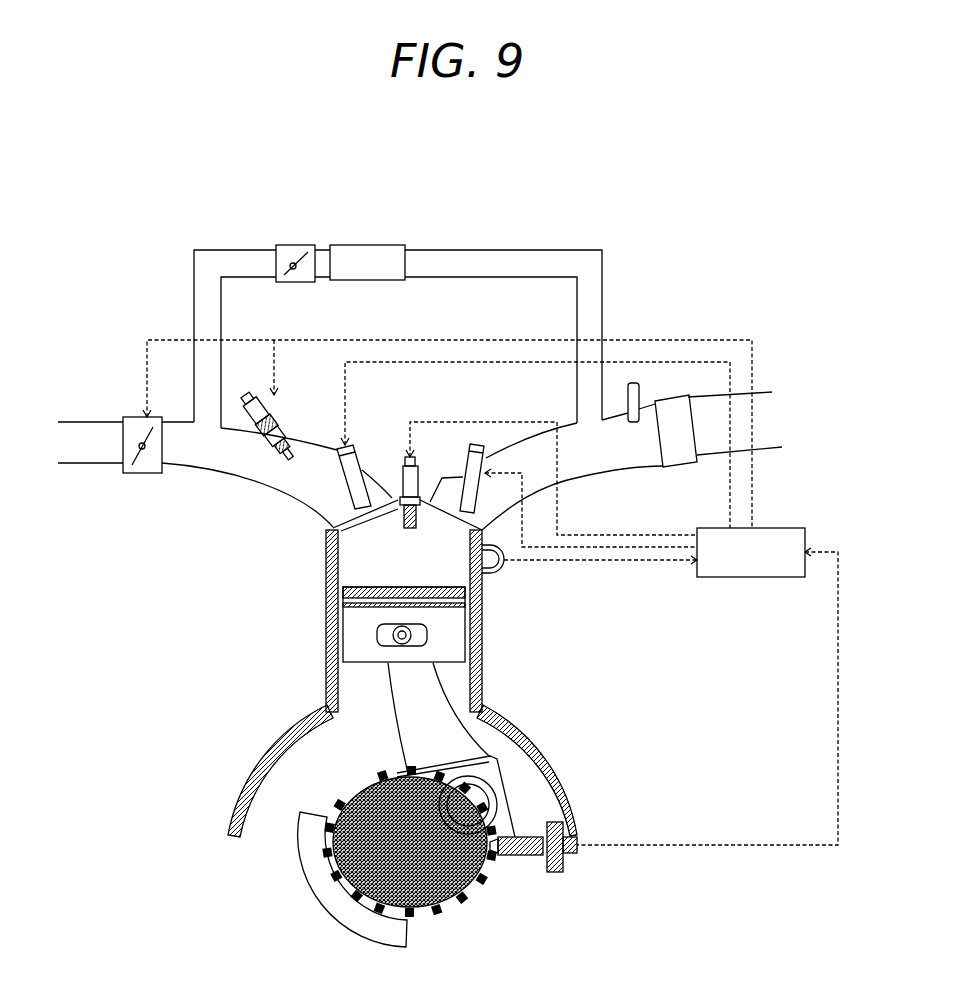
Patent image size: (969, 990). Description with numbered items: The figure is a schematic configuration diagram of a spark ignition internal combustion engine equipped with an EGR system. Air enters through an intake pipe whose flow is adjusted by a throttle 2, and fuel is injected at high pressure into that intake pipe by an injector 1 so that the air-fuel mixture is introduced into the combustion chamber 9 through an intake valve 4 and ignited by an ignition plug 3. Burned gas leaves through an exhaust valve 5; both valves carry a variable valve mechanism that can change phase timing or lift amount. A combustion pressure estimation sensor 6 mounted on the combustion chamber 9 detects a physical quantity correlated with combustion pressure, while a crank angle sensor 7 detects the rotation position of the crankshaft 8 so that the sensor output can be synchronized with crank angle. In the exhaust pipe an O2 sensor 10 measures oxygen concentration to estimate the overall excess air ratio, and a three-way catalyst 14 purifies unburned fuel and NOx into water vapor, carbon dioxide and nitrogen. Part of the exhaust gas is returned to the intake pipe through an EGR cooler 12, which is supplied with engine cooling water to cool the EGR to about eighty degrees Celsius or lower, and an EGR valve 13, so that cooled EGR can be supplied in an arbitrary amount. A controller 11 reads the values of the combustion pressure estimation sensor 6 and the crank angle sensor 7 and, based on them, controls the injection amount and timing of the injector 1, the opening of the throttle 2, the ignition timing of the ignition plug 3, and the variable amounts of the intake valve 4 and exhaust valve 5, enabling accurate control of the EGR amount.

The injector 1 is at (250, 393).
The throttle 2 is at (144, 414).
The ignition plug 3 is at (405, 460).
The intake valve 4 is at (340, 445).
The exhaust valve 5 is at (478, 441).
The combustion pressure estimation sensor 6 is at (496, 570).
The crank angle sensor 7 is at (569, 866).
The crankshaft 8 is at (462, 888).
The combustion chamber 9 is at (383, 557).
The O2 sensor 10 is at (636, 383).
The controller 11 is at (765, 578).
The EGR cooler 12 is at (383, 245).
The EGR valve 13 is at (290, 245).
The three-way catalyst 14 is at (672, 402).